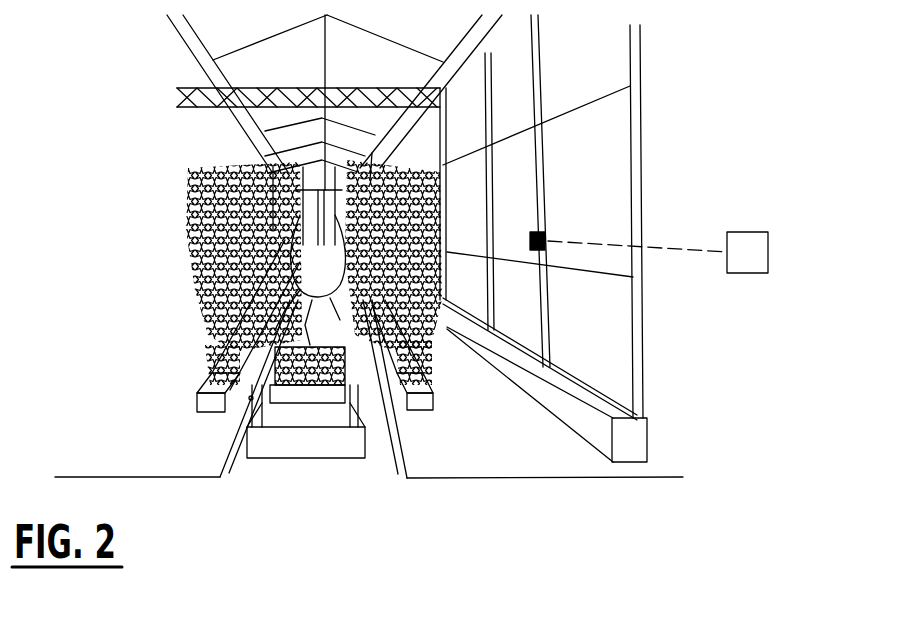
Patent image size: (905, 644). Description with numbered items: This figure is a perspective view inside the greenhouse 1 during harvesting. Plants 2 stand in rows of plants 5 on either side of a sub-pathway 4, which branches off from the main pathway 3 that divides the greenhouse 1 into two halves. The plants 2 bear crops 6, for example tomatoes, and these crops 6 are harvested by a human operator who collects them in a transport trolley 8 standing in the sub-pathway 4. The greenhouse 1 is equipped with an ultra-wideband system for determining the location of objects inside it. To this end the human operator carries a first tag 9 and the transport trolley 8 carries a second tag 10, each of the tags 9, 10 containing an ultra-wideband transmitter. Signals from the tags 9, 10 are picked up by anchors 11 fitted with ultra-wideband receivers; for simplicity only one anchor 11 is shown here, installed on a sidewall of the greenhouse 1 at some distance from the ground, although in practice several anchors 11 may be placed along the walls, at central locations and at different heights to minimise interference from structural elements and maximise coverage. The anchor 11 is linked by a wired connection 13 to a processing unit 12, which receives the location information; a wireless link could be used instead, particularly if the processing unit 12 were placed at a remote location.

The greenhouse 1 is at (100, 76).
The plants 2 is at (279, 190).
The main pathway 3 is at (705, 500).
The sub-pathway 4 is at (326, 505).
The rows of plants 5 is at (185, 462).
The crops 6 is at (165, 348).
The transport trolley 8 is at (264, 450).
The first tag 9 is at (251, 385).
The second tag 10 is at (348, 440).
The anchor 11 is at (546, 235).
The processing unit 12 is at (745, 240).
The wired connection 13 is at (677, 252).